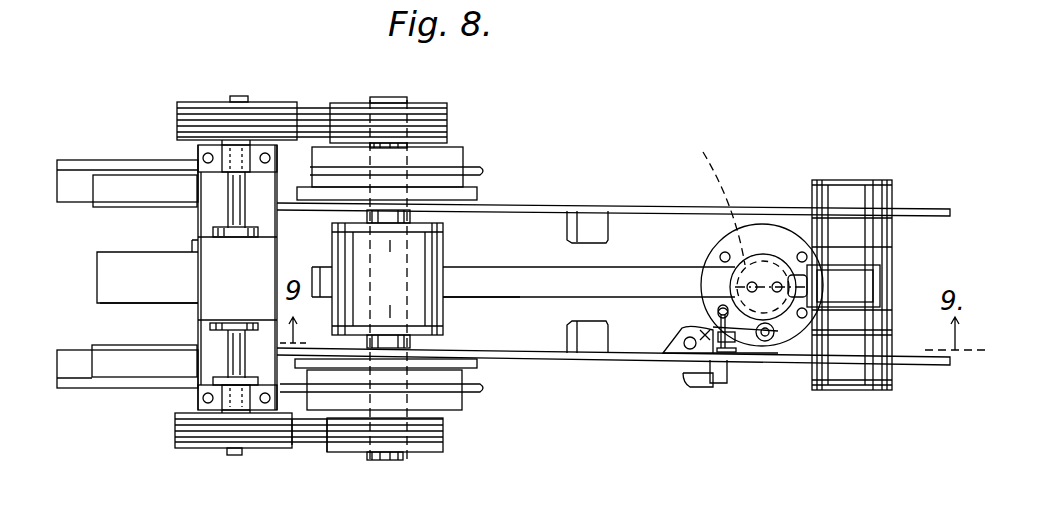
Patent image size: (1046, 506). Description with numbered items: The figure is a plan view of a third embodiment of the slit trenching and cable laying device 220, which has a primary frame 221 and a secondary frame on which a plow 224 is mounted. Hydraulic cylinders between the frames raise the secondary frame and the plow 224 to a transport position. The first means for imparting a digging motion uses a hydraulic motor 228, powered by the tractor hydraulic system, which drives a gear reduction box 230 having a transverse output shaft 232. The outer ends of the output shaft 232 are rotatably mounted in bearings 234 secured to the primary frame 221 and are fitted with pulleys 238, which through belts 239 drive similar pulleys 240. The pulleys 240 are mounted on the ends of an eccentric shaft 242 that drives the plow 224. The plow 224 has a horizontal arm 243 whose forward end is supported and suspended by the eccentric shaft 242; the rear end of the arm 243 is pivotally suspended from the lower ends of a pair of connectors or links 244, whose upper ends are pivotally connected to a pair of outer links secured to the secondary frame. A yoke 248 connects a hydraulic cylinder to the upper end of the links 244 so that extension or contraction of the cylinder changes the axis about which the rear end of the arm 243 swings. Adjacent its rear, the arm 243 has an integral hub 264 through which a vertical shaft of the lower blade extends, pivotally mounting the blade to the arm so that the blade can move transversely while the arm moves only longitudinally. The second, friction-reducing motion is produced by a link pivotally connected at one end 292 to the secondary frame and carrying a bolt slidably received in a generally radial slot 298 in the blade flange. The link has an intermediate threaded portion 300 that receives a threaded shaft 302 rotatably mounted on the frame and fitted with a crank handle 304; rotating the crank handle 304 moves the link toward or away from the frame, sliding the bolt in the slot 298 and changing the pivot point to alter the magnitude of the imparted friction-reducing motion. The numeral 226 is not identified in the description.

The slit trenching and cable laying device 220 is at (516, 188).
The primary frame 221 is at (92, 151).
The plow 224 is at (488, 262).
The frame 226 is at (180, 245).
The hydraulic motor 228 is at (145, 300).
The gear reduction box 230 is at (216, 280).
The transverse output shaft 232 is at (236, 358).
The bearings 234 is at (226, 396).
The pulleys 238 is at (270, 450).
The belts 239 is at (312, 448).
The pulleys 240 is at (358, 452).
The eccentric shaft 242 is at (404, 456).
The horizontal arm 243 is at (498, 296).
The connectors or links 244 is at (893, 252).
The yoke 248 is at (788, 270).
The hub 264 is at (752, 236).
The link end 292 is at (690, 352).
The radial slot 298 is at (770, 348).
The intermediate threaded portion 300 is at (751, 365).
The threaded shaft 302 is at (725, 322).
The crank handle 304 is at (690, 390).